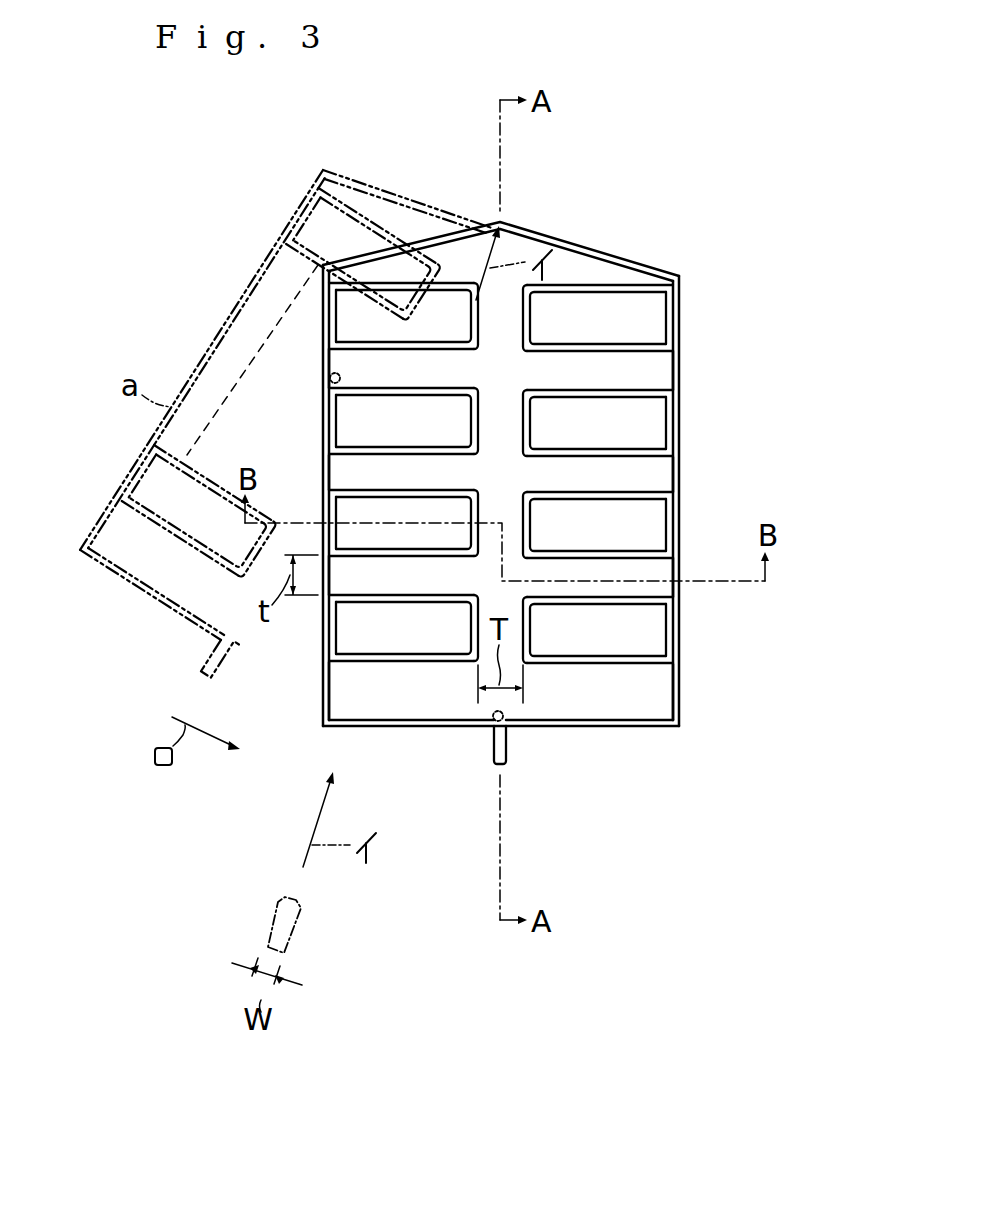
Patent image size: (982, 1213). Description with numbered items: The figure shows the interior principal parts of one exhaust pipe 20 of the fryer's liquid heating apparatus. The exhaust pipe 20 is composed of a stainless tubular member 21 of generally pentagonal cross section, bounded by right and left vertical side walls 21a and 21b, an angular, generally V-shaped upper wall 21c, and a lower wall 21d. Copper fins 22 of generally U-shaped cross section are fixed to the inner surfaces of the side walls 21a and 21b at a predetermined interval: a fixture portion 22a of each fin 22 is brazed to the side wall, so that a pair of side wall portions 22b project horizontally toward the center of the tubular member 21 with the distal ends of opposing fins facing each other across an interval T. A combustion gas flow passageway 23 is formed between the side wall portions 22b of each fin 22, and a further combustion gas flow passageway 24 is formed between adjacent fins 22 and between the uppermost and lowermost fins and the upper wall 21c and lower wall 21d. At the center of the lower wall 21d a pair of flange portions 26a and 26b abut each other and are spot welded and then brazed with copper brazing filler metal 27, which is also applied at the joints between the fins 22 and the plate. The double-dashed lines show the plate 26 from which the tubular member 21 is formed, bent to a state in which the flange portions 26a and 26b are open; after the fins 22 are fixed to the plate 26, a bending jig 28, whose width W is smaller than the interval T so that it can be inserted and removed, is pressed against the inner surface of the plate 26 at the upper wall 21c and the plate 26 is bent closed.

The exhaust pipe 20 is at (717, 242).
The tubular member 21 is at (684, 736).
The side wall 21a is at (274, 248).
The side wall 21b is at (681, 633).
The upper wall 21c is at (449, 237).
The lower wall 21d is at (585, 726).
The fin 22 is at (660, 388).
The fixture portion 22a is at (674, 418).
The side wall portion 22b is at (600, 389).
The combustion gas flow passageway 23 is at (342, 318).
The combustion gas flow passageway 24 is at (383, 270).
The plate 26 is at (209, 348).
The flange portion 26a is at (210, 672).
The flange portion 26b is at (506, 745).
The copper brazing filler metal 27 is at (328, 381).
The bending jig 28 is at (270, 918).